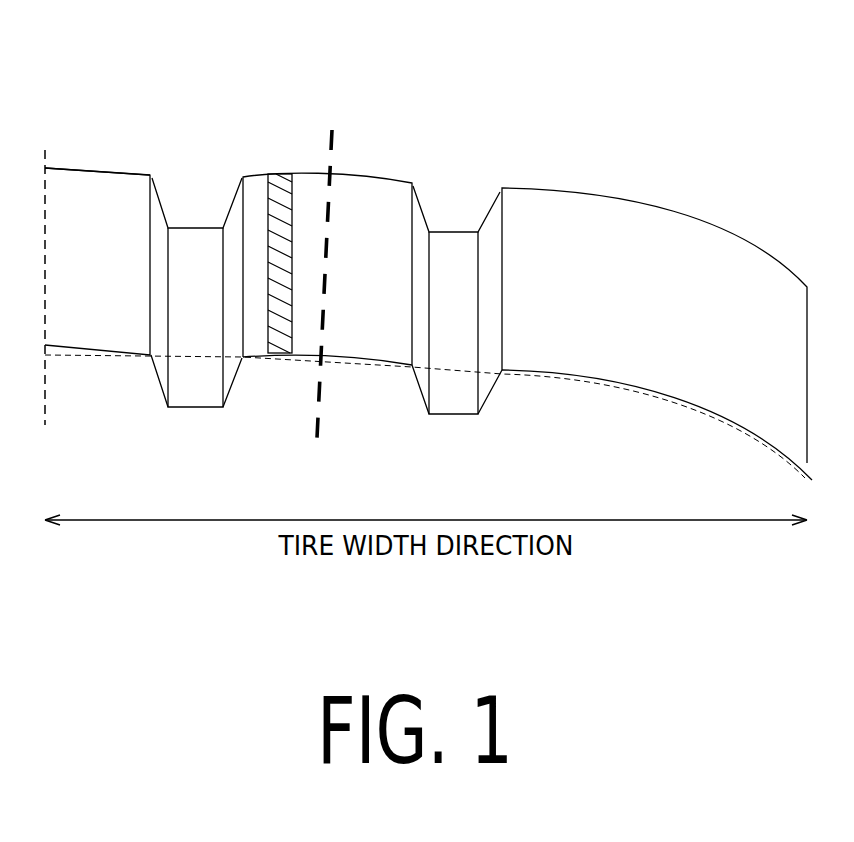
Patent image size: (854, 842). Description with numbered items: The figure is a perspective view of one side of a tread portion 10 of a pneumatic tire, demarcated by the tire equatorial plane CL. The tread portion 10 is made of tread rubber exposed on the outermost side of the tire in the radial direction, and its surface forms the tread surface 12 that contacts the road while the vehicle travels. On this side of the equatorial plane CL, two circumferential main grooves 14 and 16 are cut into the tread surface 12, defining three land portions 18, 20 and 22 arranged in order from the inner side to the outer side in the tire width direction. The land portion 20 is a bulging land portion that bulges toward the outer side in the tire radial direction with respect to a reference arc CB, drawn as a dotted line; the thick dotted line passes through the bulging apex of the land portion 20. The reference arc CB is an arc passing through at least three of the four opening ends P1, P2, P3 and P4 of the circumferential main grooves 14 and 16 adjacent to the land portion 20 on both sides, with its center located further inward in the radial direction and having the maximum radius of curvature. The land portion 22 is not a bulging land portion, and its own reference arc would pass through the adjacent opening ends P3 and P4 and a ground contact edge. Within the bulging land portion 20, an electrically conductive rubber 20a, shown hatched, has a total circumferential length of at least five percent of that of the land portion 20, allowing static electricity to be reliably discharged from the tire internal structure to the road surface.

The tread portion 10 is at (237, 90).
The tread surface 12 is at (100, 183).
The circumferential main groove 14 is at (197, 237).
The circumferential main groove 16 is at (452, 243).
The land portion 18 is at (113, 272).
The bulging land portion 20 is at (387, 272).
The electrically conductive rubber 20a is at (285, 175).
The land portion 22 is at (668, 311).
The tire equatorial plane CL is at (45, 271).
The opening end P1 is at (150, 355).
The opening end P2 is at (243, 357).
The opening end P3 is at (410, 365).
The opening end P4 is at (503, 372).
The reference arc CB is at (450, 368).